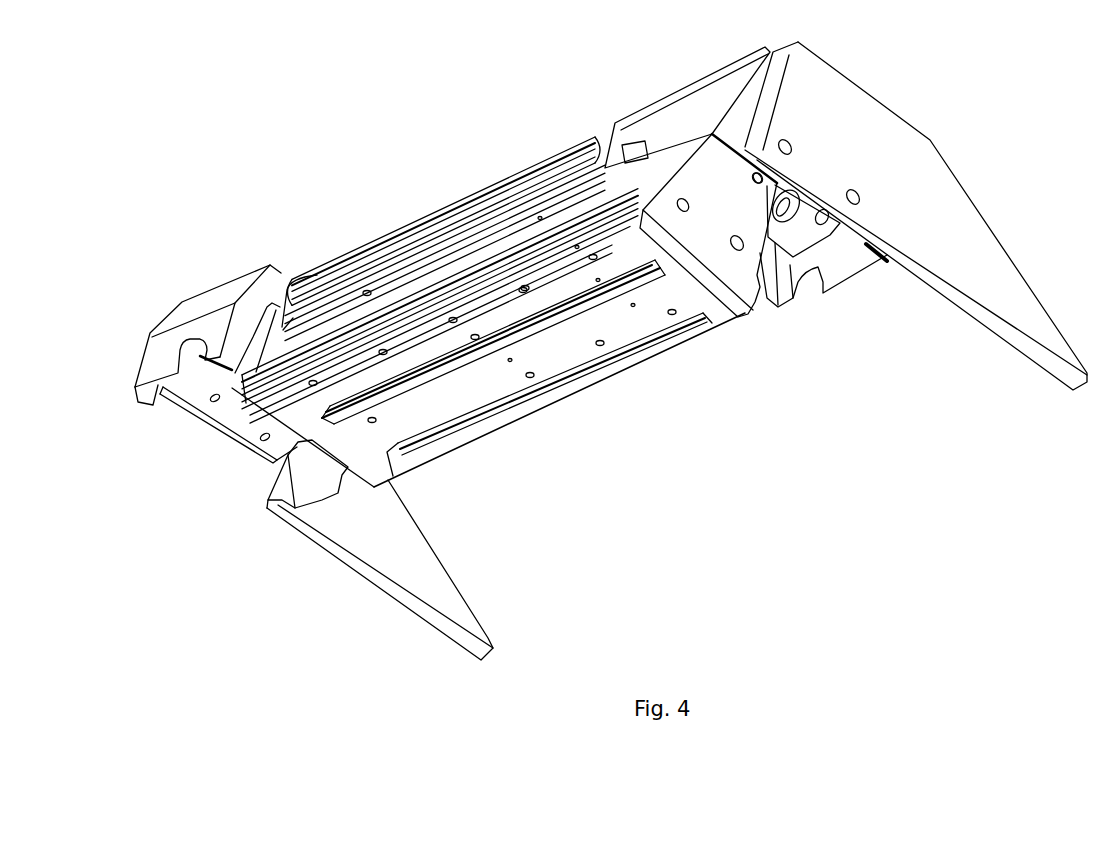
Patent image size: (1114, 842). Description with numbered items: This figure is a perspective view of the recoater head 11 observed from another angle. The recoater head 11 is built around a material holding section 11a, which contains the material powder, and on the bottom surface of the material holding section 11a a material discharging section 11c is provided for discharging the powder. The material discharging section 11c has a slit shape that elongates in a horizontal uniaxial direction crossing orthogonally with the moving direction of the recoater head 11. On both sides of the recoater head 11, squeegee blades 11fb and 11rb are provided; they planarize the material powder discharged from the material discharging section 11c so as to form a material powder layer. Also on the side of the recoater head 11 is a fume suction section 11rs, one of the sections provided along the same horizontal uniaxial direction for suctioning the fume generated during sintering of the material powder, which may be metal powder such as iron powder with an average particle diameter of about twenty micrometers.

The recoater head 11 is at (474, 129).
The fume suction section 11rs is at (463, 198).
The squeegee blade 11rb is at (300, 352).
The material discharging section 11c is at (619, 317).
The material holding section 11a is at (726, 314).
The squeegee blade 11fb is at (527, 418).